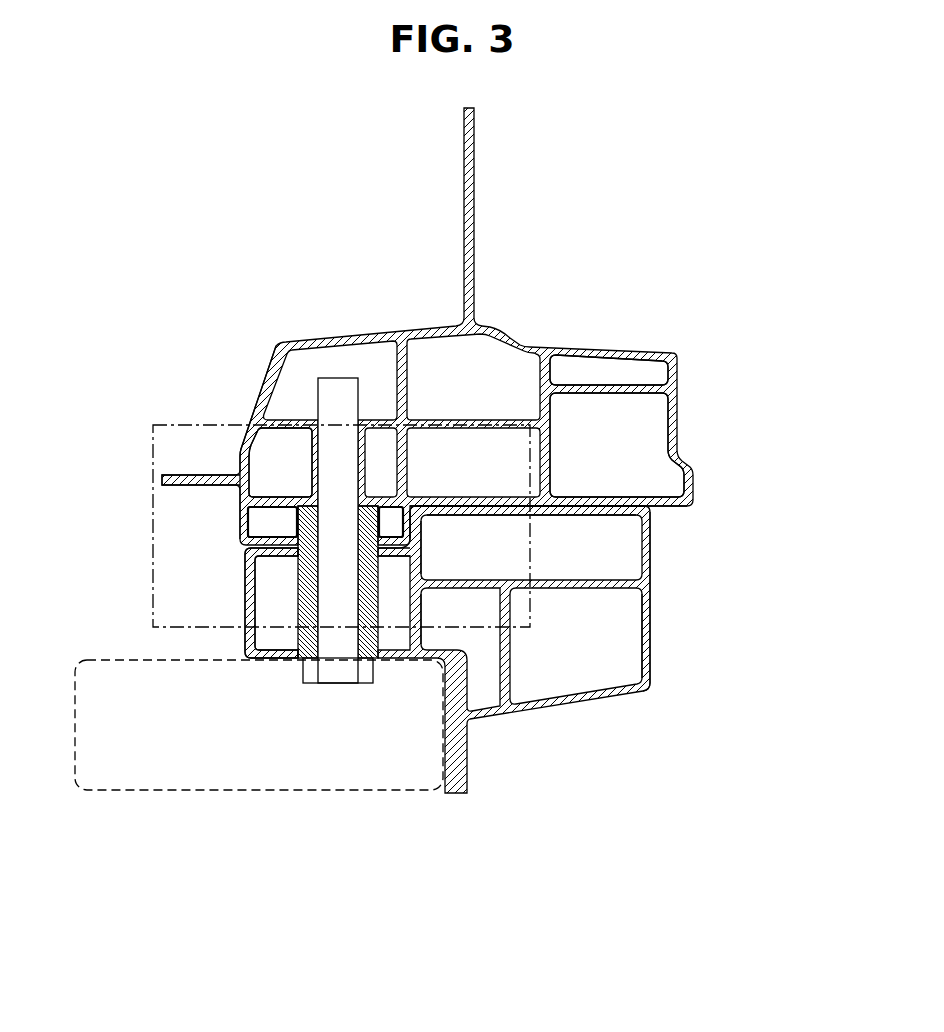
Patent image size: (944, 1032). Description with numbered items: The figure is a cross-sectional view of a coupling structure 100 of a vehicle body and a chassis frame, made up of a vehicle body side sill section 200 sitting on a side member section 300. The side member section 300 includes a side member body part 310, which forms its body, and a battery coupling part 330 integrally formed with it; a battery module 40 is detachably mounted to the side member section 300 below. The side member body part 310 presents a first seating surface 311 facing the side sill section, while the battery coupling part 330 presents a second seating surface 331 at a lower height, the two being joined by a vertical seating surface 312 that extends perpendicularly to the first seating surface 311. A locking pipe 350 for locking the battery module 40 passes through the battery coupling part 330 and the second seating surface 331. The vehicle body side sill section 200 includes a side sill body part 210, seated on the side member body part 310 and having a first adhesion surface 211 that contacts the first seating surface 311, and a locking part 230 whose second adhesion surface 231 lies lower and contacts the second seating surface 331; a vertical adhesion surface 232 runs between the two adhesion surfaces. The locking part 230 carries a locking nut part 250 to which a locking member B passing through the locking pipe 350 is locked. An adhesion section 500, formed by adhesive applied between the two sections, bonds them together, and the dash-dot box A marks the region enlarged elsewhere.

The coupling structure 100 is at (112, 227).
The vehicle body side sill section 200 is at (769, 349).
The side sill body part 210 is at (672, 390).
The first adhesion surface 211 is at (512, 476).
The locking part 230 is at (279, 348).
The second adhesion surface 231 is at (250, 530).
The vertical adhesion surface 232 is at (240, 468).
The locking nut part 250 is at (312, 447).
The side member section 300 is at (722, 727).
The side member body part 310 is at (650, 657).
The first seating surface 311 is at (600, 507).
The vertical seating surface 312 is at (417, 527).
The battery coupling part 330 is at (250, 578).
The second seating surface 331 is at (287, 553).
The locking pipe 350 is at (310, 603).
The adhesion section 500 is at (677, 507).
The battery module 40 is at (134, 791).
The region A is at (158, 423).
The locking member B is at (334, 668).